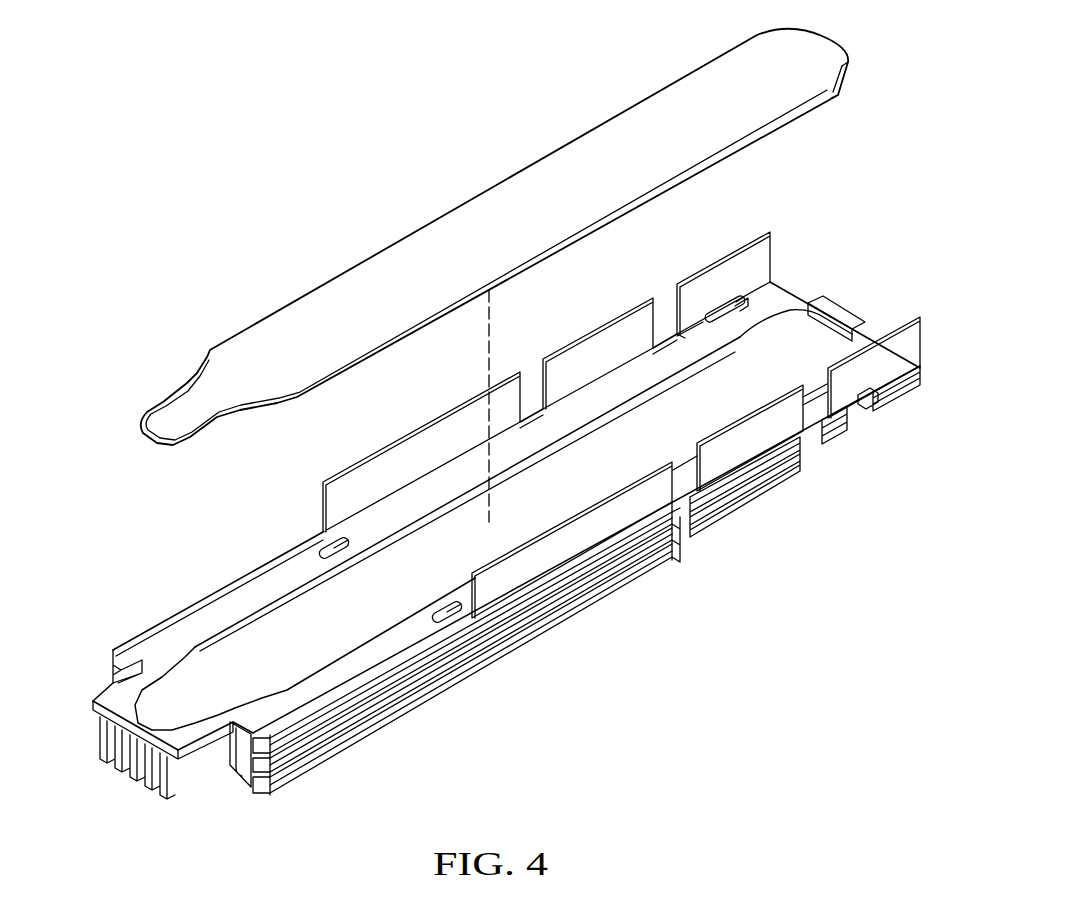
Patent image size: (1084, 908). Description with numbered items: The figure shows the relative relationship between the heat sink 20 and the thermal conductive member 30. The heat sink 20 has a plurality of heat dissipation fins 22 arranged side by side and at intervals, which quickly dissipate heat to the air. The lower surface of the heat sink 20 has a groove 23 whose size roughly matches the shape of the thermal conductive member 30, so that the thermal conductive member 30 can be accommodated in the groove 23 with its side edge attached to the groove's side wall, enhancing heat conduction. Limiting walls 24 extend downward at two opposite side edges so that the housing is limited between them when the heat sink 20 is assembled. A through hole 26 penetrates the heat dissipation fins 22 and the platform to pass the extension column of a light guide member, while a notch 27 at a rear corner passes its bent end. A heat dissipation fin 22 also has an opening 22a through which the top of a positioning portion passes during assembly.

The heat sink 20 is at (858, 258).
The heat dissipation fins 22 is at (165, 790).
The opening 22a is at (722, 304).
The groove 23 is at (212, 647).
The limiting walls 24 is at (758, 252).
The through hole 26 is at (320, 543).
The notch 27 is at (100, 668).
The thermal conductive member 30 is at (247, 343).